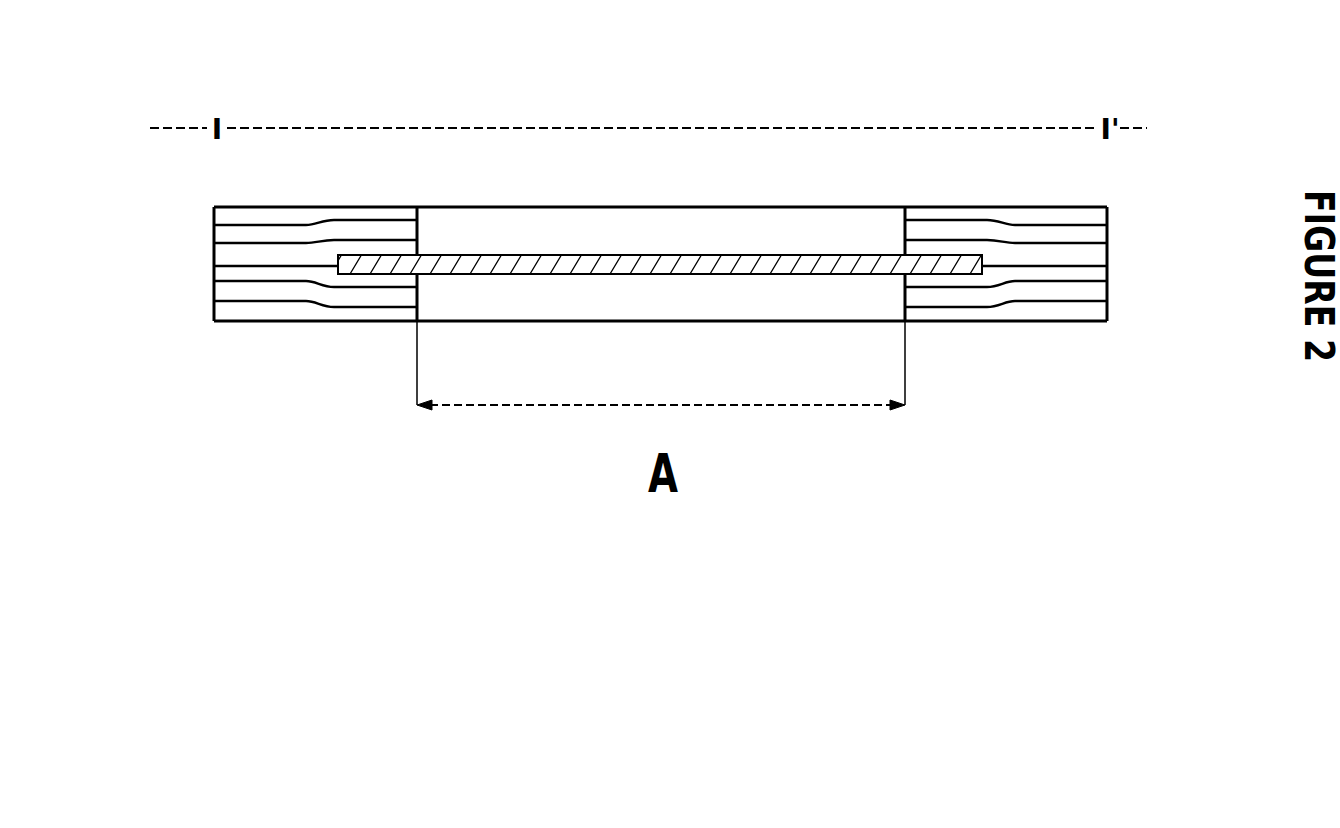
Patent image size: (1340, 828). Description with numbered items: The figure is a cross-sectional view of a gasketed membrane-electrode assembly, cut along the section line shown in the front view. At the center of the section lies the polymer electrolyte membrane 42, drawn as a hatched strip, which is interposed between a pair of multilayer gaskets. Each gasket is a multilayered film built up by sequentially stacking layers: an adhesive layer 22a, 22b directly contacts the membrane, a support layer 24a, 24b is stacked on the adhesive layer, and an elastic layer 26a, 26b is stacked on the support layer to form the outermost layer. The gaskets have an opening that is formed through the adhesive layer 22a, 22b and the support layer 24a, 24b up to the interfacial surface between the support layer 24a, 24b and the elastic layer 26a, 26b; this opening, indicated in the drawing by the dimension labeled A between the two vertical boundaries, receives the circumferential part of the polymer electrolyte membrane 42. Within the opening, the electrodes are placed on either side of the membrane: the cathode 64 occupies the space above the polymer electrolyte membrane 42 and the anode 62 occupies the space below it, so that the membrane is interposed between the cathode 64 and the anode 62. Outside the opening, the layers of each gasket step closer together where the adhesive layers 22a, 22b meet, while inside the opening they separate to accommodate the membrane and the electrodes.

The adhesive layer 22a is at (1107, 274).
The adhesive layer 22b is at (1107, 250).
The support layer 24a is at (1107, 292).
The support layer 24b is at (1107, 228).
The elastic layer 26a is at (1107, 312).
The elastic layer 26b is at (1107, 210).
The polymer electrolyte membrane 42 is at (567, 276).
The anode 62 is at (746, 322).
The cathode 64 is at (779, 213).